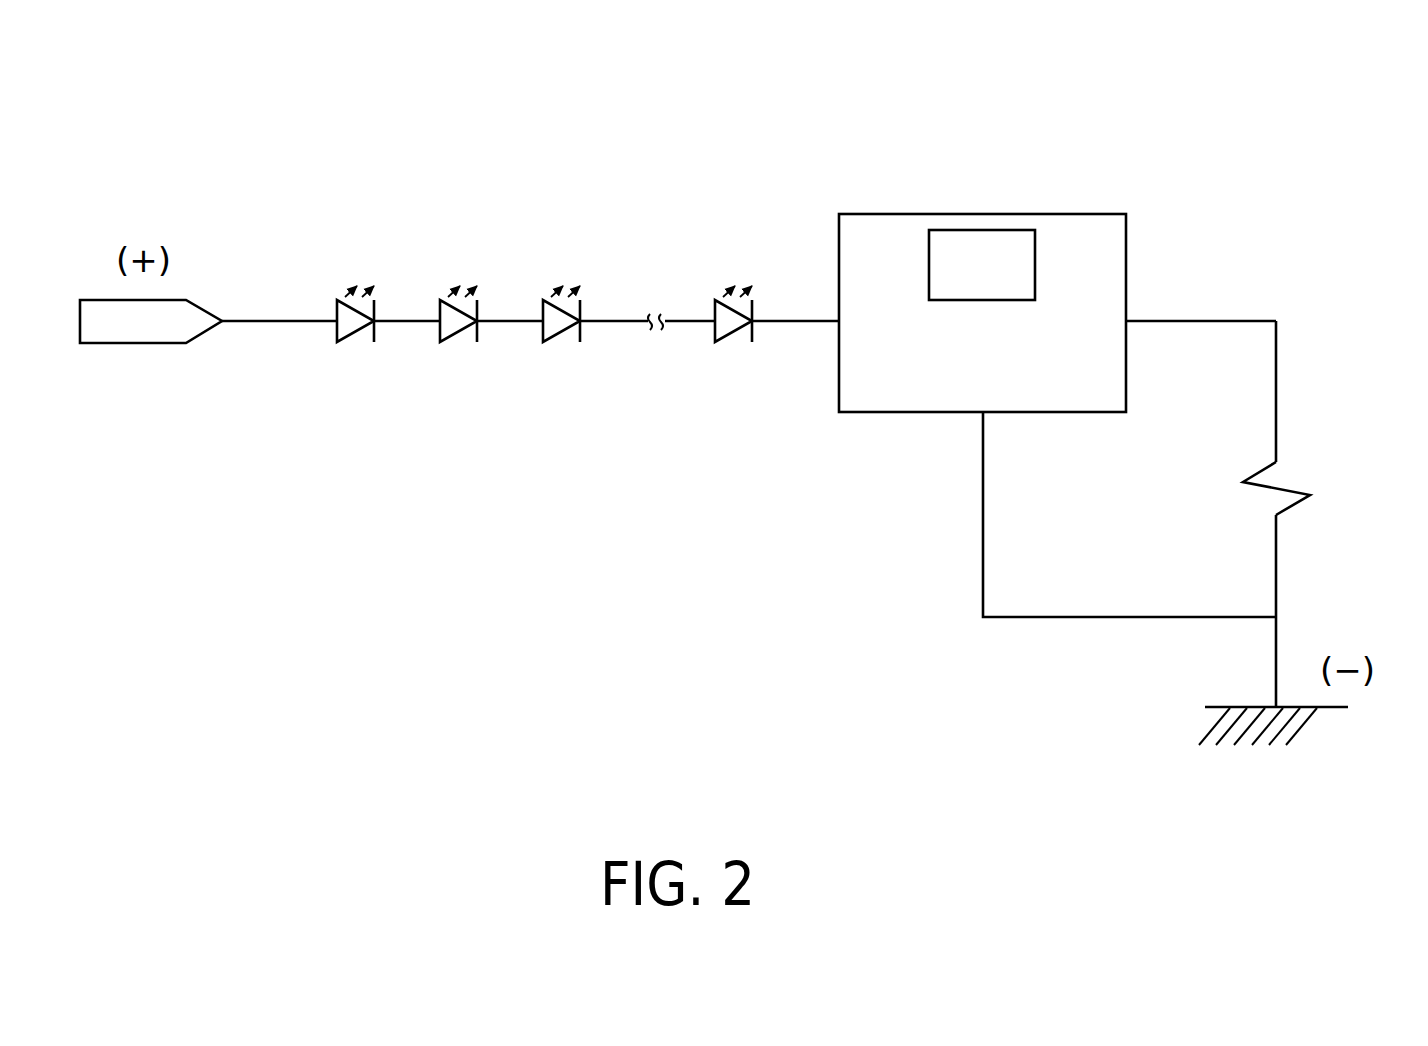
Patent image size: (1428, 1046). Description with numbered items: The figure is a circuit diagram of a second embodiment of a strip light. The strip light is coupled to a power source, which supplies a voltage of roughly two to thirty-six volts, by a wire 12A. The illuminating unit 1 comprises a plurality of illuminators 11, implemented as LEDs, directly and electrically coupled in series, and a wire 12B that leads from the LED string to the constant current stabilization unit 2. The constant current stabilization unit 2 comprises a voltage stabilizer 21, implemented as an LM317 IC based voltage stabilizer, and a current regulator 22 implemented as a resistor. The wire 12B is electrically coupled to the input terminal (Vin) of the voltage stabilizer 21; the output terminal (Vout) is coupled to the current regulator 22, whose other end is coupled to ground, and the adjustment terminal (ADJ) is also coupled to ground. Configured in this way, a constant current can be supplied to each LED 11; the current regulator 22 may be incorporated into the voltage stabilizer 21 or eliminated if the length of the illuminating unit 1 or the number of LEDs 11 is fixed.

The illuminating unit 1 is at (556, 255).
The illuminator 11 is at (441, 343).
The wire 12A is at (278, 321).
The wire 12B is at (800, 321).
The constant current stabilization unit 2 is at (1026, 215).
The voltage stabilizer 21 is at (972, 265).
The current regulator 22 is at (1287, 478).